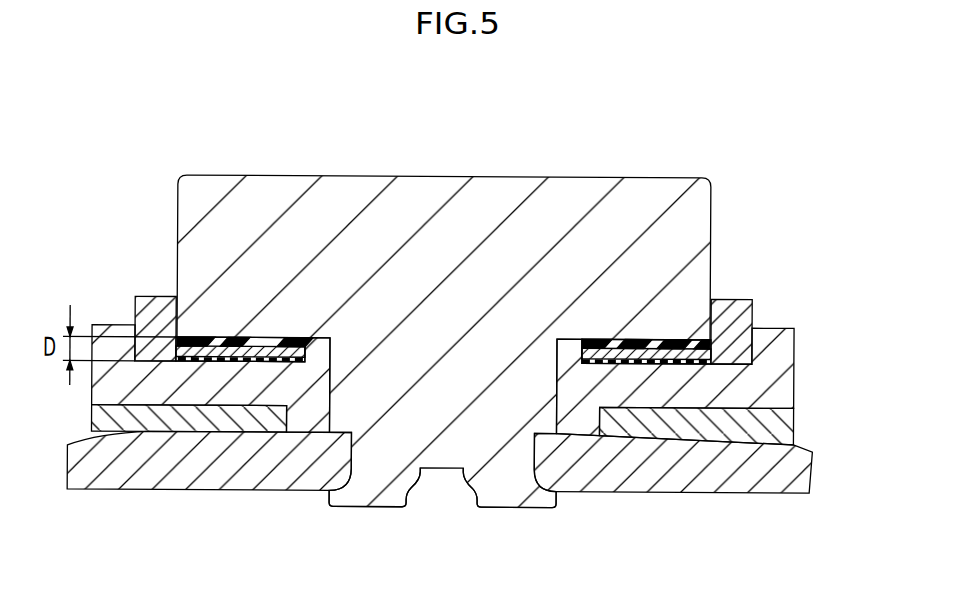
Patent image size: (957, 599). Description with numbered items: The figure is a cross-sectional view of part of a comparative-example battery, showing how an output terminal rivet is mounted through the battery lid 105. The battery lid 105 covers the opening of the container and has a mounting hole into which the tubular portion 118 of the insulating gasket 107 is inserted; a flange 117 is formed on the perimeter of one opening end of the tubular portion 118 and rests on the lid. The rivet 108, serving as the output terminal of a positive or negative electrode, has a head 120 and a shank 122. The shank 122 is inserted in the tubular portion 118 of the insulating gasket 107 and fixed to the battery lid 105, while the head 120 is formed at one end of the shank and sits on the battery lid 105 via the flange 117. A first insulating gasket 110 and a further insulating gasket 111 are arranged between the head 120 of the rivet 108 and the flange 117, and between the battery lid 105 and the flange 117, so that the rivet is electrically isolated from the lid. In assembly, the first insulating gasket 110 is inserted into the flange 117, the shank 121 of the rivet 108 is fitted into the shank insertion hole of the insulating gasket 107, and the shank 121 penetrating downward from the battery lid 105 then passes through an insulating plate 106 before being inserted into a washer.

The battery lid 105 is at (778, 368).
The insulating plate 106 is at (780, 424).
The insulating gasket 107 is at (151, 290).
The rivet 108 is at (544, 168).
The first insulating gasket 110 is at (702, 340).
The insulating gasket 111 is at (751, 340).
The flange 117 is at (226, 362).
The tubular portion 118 is at (304, 366).
The head 120 is at (452, 197).
The shank 121 is at (504, 385).
The shank 122 is at (371, 480).